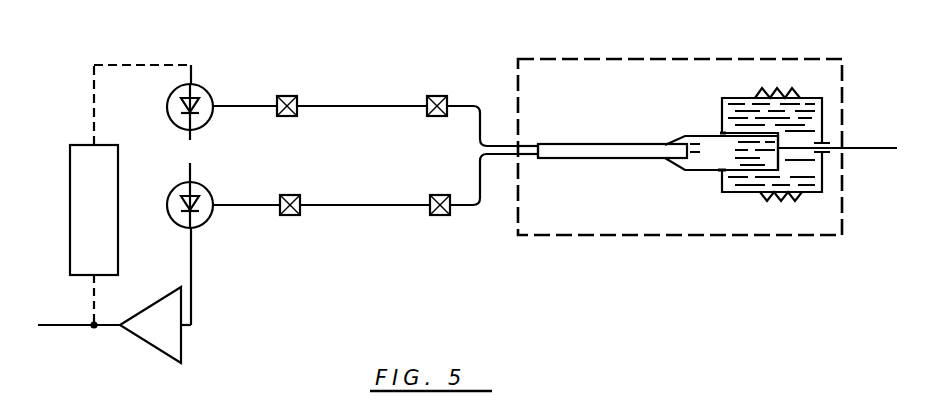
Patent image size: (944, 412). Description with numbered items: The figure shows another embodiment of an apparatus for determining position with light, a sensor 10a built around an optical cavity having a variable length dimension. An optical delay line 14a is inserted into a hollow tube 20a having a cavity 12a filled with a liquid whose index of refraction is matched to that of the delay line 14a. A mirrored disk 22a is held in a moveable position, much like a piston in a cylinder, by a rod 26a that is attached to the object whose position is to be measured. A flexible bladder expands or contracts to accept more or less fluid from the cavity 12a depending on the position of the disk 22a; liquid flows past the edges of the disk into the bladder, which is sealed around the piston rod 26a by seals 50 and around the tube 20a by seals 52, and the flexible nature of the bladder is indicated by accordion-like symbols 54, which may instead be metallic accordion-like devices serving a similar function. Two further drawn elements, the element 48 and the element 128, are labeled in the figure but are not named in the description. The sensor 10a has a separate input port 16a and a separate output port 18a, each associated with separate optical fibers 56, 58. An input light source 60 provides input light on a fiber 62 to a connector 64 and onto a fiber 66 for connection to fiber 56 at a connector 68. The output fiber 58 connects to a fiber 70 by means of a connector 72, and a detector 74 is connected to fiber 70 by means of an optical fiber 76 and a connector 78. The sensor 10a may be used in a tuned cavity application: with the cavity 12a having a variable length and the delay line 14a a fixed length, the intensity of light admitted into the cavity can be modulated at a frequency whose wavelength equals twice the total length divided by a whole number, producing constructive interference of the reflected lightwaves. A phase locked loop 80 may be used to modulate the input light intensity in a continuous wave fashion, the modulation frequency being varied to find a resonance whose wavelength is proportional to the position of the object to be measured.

The sensor 10a is at (570, 58).
The cavity 12a is at (732, 151).
The optical delay line 14a is at (608, 141).
The input port 16a is at (528, 139).
The output port 18a is at (527, 159).
The hollow tube 20a is at (684, 135).
The mirrored disk 22a is at (766, 199).
The rod 26a is at (866, 153).
The upper temperature-controlled block 48 is at (828, 80).
The seals 50 is at (823, 143).
The seals 52 is at (719, 174).
The accordion-like symbols 54 is at (766, 95).
The optical fiber 56 is at (478, 100).
The output fiber 58 is at (477, 212).
The input light source 60 is at (197, 82).
The fiber 62 is at (240, 103).
The connector 64 is at (291, 96).
The fiber 66 is at (365, 104).
The connector 68 is at (435, 96).
The fiber 70 is at (363, 207).
The connector 72 is at (443, 194).
The detector 74 is at (204, 221).
The optical fiber 76 is at (250, 207).
The connector 78 is at (300, 195).
The phase locked loop 80 is at (75, 145).
The heater element 128 is at (762, 196).